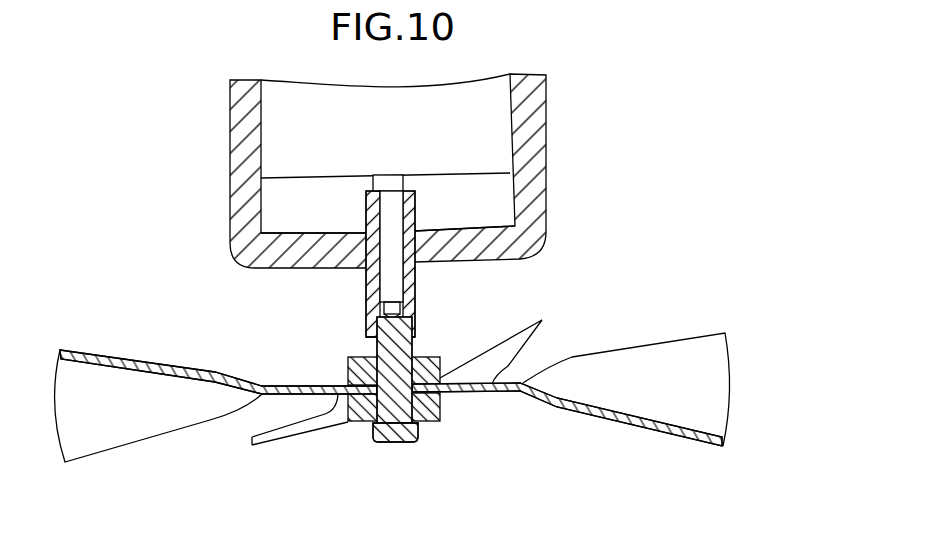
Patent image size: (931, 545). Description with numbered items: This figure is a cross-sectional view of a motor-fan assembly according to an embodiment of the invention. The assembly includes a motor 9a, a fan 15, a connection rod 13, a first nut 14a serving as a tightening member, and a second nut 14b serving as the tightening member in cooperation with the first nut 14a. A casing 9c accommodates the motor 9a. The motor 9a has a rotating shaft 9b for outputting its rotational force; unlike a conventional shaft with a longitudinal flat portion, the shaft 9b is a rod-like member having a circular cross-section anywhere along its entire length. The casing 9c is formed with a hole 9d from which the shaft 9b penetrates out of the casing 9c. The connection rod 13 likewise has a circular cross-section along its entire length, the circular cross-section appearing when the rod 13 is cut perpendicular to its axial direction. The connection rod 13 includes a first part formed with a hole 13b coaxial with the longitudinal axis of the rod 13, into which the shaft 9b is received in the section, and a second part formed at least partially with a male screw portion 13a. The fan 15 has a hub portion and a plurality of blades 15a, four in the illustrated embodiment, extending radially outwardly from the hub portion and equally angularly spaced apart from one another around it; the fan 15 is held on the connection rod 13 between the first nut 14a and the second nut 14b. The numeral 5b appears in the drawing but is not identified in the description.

The rotor boss 5b is at (372, 335).
The motor 9a is at (282, 128).
The rotating shaft 9b is at (390, 213).
The casing 9c is at (543, 119).
The hole 9d is at (365, 233).
The connection rod 13 is at (418, 303).
The male screw portion 13a is at (372, 425).
The hole 13b is at (369, 281).
The first nut 14a is at (437, 357).
The second nut 14b is at (438, 421).
The fan 15 is at (513, 396).
The blades 15a is at (708, 387).